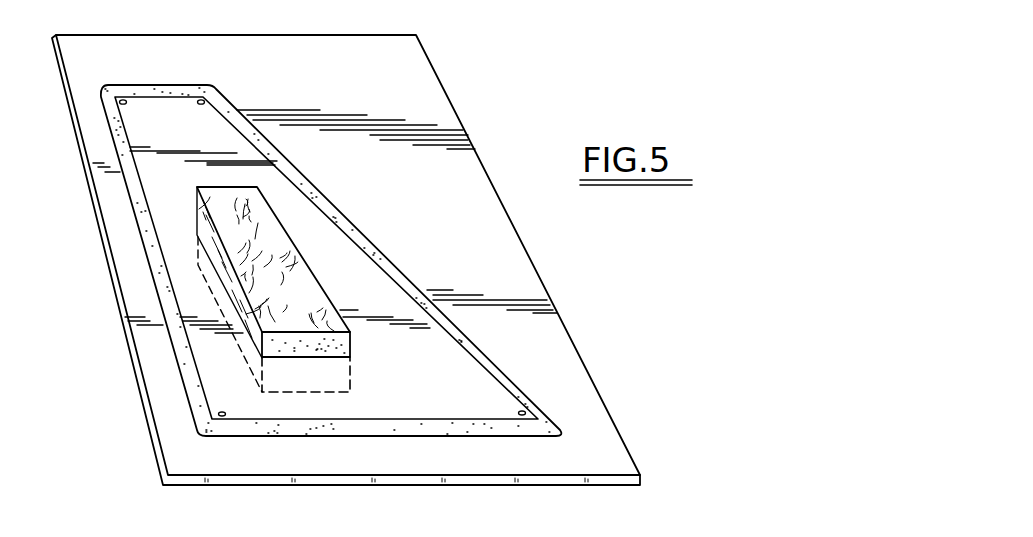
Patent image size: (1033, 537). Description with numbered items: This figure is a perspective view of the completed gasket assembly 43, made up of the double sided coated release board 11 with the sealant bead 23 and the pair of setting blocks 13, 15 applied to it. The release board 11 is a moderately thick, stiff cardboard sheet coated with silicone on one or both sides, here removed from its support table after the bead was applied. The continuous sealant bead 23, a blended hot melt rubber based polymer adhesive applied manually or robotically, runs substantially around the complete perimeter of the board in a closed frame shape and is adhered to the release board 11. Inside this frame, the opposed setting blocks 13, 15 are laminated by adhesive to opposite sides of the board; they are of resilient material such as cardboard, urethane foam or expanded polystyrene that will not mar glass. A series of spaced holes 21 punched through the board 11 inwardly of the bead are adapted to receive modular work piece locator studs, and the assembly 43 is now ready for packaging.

The coated release board 11 is at (572, 354).
The setting block 13 is at (352, 351).
The setting block 15 is at (356, 389).
The spaced holes 21 is at (199, 99).
The sealant bead 23 is at (350, 223).
The gasket assembly 43 is at (492, 112).